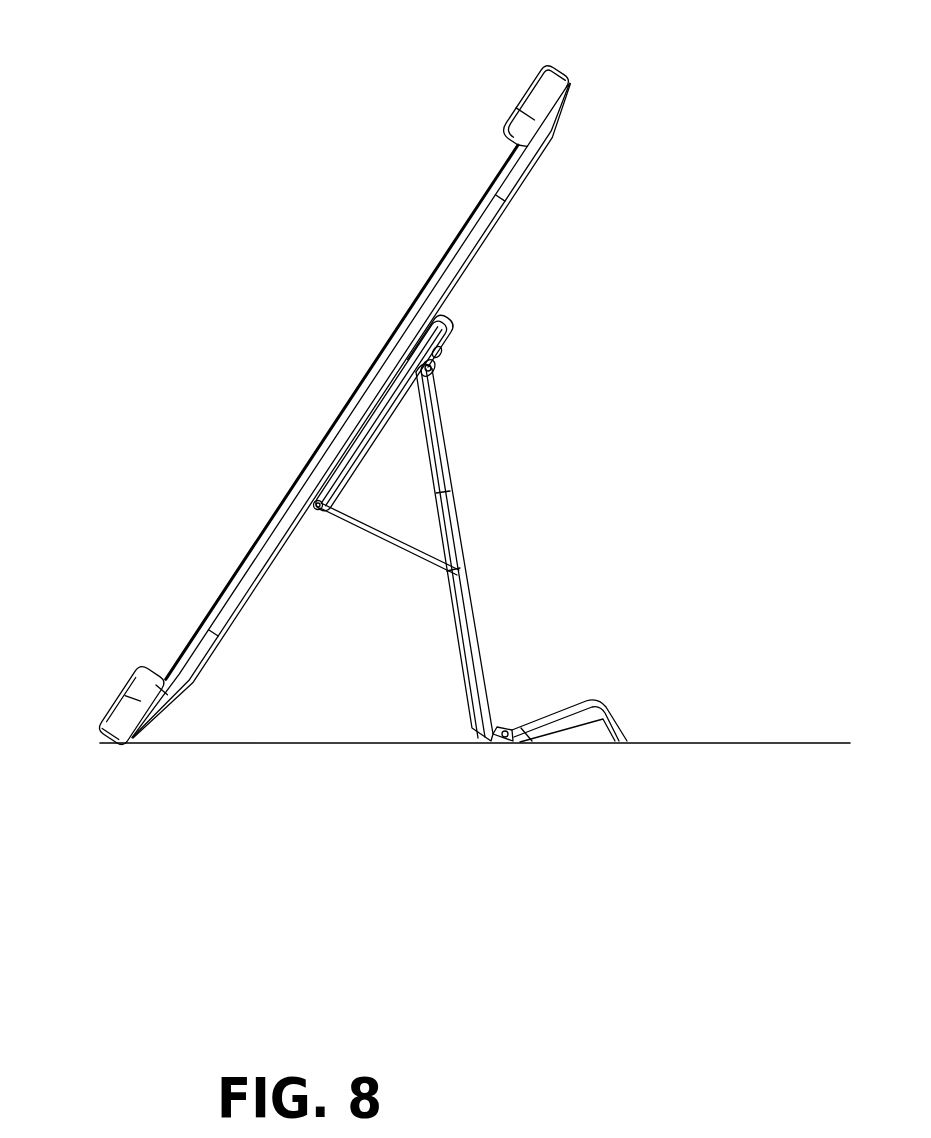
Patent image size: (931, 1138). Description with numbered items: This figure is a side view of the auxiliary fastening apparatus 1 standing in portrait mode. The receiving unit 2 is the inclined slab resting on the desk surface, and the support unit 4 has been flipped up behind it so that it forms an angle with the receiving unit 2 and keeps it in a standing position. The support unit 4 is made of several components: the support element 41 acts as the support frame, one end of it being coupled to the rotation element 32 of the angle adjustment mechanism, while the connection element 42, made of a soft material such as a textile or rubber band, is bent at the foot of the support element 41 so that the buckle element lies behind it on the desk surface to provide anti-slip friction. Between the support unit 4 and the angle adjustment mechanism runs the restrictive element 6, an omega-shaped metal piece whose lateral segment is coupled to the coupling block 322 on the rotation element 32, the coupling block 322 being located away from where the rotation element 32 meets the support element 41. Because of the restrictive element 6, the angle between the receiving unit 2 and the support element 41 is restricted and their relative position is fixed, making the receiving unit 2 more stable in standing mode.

The auxiliary fastening apparatus 1 is at (436, 107).
The receiving unit 2 is at (347, 425).
The rotation element 32 is at (340, 478).
The coupling block 322 is at (318, 510).
The support unit 4 is at (681, 606).
The support element 41 is at (460, 540).
The connection element 42 is at (563, 724).
The restrictive element 6 is at (377, 532).